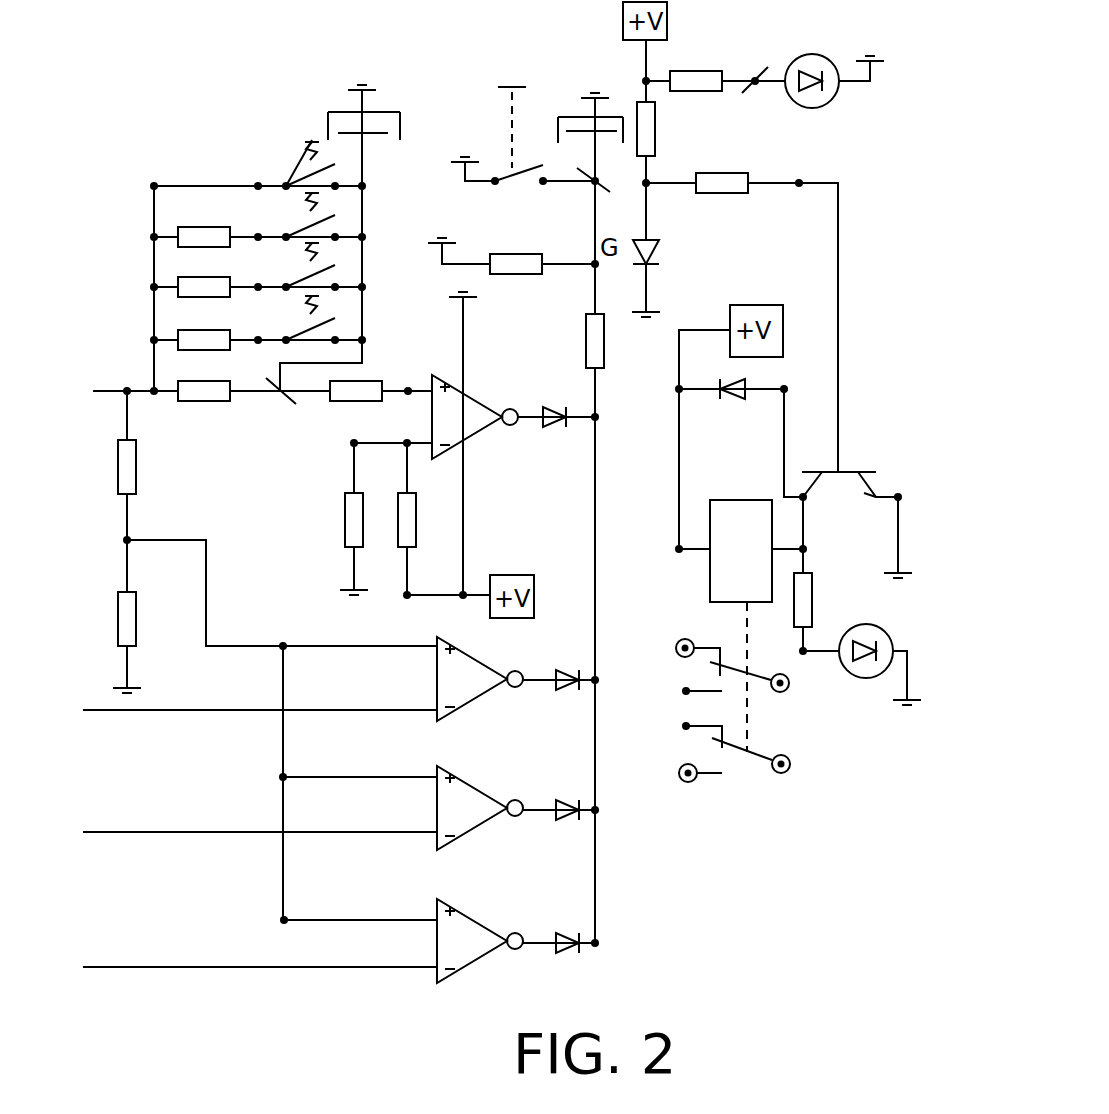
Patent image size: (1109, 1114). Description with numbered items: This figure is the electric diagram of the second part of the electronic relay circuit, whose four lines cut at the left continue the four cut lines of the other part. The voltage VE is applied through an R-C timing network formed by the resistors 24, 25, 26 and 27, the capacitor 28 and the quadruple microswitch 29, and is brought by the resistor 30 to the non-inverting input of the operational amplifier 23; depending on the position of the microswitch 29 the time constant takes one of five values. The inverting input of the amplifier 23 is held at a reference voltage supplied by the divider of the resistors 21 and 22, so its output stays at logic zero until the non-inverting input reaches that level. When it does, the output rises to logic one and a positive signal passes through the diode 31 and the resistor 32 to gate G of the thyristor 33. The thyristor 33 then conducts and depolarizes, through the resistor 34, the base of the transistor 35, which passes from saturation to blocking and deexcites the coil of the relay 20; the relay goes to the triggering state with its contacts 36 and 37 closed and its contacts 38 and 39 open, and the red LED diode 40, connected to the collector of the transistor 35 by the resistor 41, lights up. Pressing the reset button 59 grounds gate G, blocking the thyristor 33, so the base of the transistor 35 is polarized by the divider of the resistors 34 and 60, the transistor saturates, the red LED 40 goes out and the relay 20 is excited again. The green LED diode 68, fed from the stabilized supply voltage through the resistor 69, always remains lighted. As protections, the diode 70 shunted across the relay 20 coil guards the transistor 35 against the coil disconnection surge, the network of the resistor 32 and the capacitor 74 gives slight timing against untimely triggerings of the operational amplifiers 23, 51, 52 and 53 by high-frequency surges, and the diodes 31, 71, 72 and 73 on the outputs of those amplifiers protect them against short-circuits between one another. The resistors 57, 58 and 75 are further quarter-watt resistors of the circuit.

The relay 20 is at (758, 626).
The resistor 21 is at (339, 519).
The resistor 22 is at (423, 519).
The operational amplifier 23 is at (475, 443).
The resistor 24 is at (258, 234).
The resistor 25 is at (258, 284).
The resistor 26 is at (258, 337).
The resistor 27 is at (211, 405).
The capacitor 28 is at (364, 135).
The quadruple microswitch 29 is at (317, 133).
The resistor 30 is at (349, 404).
The diode 31 is at (556, 431).
The resistor 32 is at (611, 348).
The thyristor 33 is at (661, 276).
The resistor 34 is at (742, 322).
The transistor 35 is at (855, 509).
The contact 36 is at (754, 693).
The contact 37 is at (689, 667).
The contact 38 is at (741, 764).
The contact 39 is at (695, 789).
The red LED diode 40 is at (862, 661).
The resistor 41 is at (819, 576).
The operational amplifier 51 is at (480, 683).
The operational amplifier 52 is at (480, 814).
The operational amplifier 53 is at (480, 947).
The resistor 57 is at (144, 465).
The resistor 58 is at (142, 614).
The reset button 59 is at (523, 121).
The resistor 60 is at (662, 129).
The green LED diode 68 is at (834, 87).
The resistor 69 is at (715, 69).
The diode 70 is at (741, 438).
The diode 71 is at (559, 694).
The diode 72 is at (559, 827).
The diode 73 is at (559, 960).
The capacitor 74 is at (592, 142).
The resistor 75 is at (511, 271).